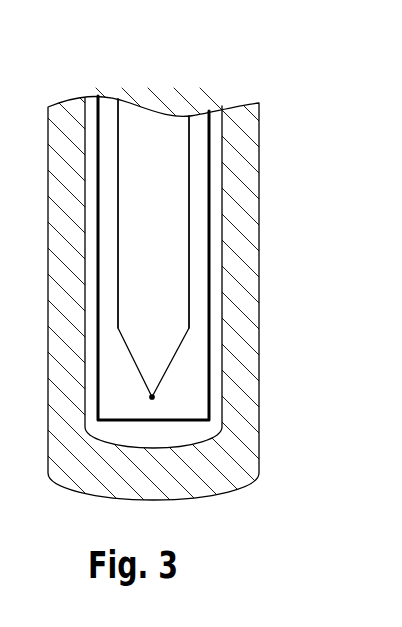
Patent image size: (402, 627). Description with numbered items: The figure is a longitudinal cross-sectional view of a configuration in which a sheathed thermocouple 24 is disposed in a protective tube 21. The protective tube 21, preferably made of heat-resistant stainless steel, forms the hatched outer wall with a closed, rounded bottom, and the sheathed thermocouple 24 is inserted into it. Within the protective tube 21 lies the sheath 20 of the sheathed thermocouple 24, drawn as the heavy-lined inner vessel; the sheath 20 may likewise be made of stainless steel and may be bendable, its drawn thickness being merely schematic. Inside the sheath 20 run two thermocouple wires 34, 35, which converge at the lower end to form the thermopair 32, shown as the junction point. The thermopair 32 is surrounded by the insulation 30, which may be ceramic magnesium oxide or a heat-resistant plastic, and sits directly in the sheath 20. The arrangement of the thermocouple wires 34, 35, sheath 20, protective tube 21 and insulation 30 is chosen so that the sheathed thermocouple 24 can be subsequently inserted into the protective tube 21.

The sheath 20 is at (210, 265).
The protective tube 21 is at (245, 168).
The sheathed thermocouple 24 is at (212, 328).
The insulation 30 is at (165, 218).
The thermopair 32 is at (152, 397).
The thermocouple wire 34 is at (118, 137).
The thermocouple wire 35 is at (188, 138).